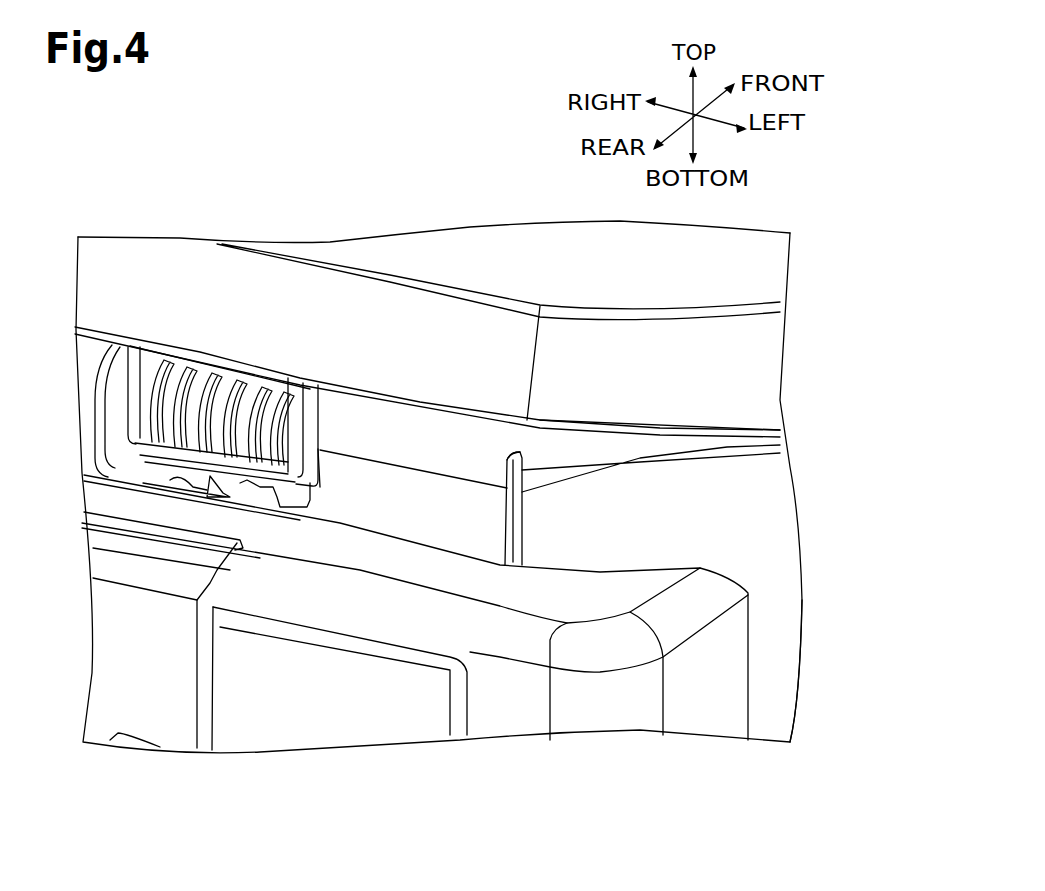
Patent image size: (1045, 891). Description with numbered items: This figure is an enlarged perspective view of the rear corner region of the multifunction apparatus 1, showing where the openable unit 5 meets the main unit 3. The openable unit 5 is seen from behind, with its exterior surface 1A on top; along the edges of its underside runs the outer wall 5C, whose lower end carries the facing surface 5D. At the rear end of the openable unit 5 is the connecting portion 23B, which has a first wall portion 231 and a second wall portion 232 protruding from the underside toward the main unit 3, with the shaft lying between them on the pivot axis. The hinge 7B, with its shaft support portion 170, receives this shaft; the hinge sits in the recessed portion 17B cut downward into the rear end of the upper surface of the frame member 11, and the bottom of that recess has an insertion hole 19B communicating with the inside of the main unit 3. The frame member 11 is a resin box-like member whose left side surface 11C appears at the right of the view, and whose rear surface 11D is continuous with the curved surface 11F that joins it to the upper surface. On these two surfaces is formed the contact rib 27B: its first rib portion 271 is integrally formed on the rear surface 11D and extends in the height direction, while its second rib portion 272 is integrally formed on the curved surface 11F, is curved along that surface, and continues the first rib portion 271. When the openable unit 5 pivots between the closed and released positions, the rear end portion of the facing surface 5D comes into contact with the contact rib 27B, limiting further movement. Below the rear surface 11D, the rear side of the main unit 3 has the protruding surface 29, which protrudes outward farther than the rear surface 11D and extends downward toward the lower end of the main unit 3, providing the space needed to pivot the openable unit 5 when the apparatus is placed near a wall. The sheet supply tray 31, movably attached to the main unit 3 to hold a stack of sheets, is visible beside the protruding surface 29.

The multifunction apparatus 1 is at (342, 212).
The exterior surface 1A is at (662, 266).
The main unit 3 is at (698, 716).
The openable unit 5 is at (504, 256).
The outer wall 5C is at (712, 398).
The facing surface 5D is at (383, 400).
The hinge 7B is at (252, 492).
The frame member 11 is at (83, 415).
The left side surface 11C is at (767, 713).
The rear surface 11D is at (457, 500).
The curved surface 11F is at (437, 443).
The recessed portion 17B is at (115, 467).
The insertion hole 19B is at (176, 478).
The connecting portion 23B is at (322, 403).
The contact rib 27B is at (495, 510).
The protruding surface 29 is at (340, 717).
The sheet supply tray 31 is at (148, 705).
The shaft support portion 170 is at (203, 380).
The first wall portion 231 is at (132, 363).
The second wall portion 232 is at (297, 390).
The first rib portion 271 is at (514, 526).
The second rib portion 272 is at (521, 457).